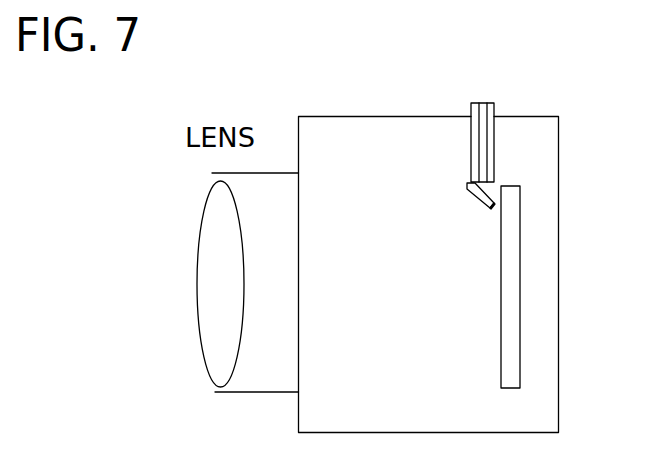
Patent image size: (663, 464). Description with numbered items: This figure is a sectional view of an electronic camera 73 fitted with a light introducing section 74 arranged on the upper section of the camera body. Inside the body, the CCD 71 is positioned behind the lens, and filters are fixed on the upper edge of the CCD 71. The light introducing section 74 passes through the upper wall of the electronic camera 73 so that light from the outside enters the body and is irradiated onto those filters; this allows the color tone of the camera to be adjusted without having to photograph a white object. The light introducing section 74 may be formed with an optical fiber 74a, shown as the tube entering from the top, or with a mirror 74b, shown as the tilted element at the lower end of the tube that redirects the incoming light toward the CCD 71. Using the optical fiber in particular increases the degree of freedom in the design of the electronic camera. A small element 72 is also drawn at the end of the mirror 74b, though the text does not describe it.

The CCD 71 is at (513, 390).
The light receiving element 72 is at (495, 202).
The electronic camera 73 is at (560, 247).
The light introducing section 74 is at (499, 151).
The optical fiber 74a is at (496, 103).
The mirror 74b is at (465, 200).